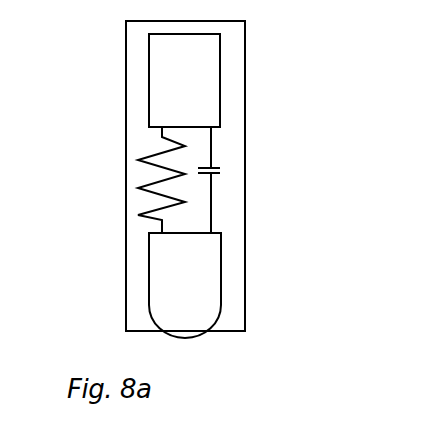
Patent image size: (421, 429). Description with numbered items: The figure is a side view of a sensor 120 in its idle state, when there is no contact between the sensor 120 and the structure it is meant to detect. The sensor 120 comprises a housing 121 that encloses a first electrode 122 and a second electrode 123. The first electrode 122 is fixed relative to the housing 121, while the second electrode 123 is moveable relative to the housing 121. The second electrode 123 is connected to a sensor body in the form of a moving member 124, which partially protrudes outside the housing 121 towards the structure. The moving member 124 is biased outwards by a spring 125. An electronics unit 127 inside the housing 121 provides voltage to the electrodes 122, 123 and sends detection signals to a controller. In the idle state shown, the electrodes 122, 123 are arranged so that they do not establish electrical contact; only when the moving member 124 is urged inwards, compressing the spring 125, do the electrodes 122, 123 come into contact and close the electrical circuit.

The sensor 120 is at (245, 65).
The housing 121 is at (245, 257).
The first electrode 122 is at (211, 148).
The second electrode 123 is at (211, 200).
The moving member 124 is at (205, 307).
The spring 125 is at (152, 164).
The electronics unit 127 is at (149, 63).